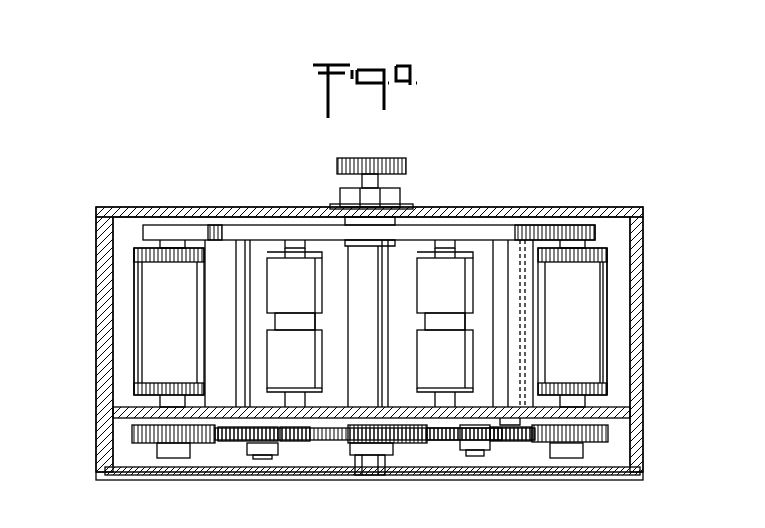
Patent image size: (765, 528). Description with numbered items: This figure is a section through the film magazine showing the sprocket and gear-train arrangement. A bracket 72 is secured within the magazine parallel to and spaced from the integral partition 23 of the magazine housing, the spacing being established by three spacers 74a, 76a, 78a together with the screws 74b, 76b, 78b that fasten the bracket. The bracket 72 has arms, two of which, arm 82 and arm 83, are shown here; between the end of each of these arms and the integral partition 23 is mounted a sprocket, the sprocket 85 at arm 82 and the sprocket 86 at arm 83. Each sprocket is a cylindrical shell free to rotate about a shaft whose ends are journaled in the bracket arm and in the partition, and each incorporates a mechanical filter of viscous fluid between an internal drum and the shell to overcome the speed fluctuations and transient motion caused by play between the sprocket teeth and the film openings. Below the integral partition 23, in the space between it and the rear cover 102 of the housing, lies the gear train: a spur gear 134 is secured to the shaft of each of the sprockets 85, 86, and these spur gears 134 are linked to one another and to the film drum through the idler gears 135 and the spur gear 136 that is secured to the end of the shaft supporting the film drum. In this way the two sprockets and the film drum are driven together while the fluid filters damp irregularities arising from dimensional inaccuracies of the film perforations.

The bracket 72 is at (478, 224).
The bracket arm 82 is at (172, 224).
The bracket arm 83 is at (565, 225).
The sprocket 85 is at (135, 312).
The sprocket 86 is at (605, 308).
The spacer 74a is at (205, 323).
The spacer 76a is at (348, 342).
The spacer 78a is at (534, 320).
The integral partition 23 is at (628, 412).
The spur gear 134 is at (160, 437).
The screw 74b is at (243, 432).
The idler gear 135 is at (287, 432).
The screw 76b is at (350, 428).
The spur gear 136 is at (406, 433).
The screw 78b is at (499, 434).
The rear cover 102 is at (548, 470).